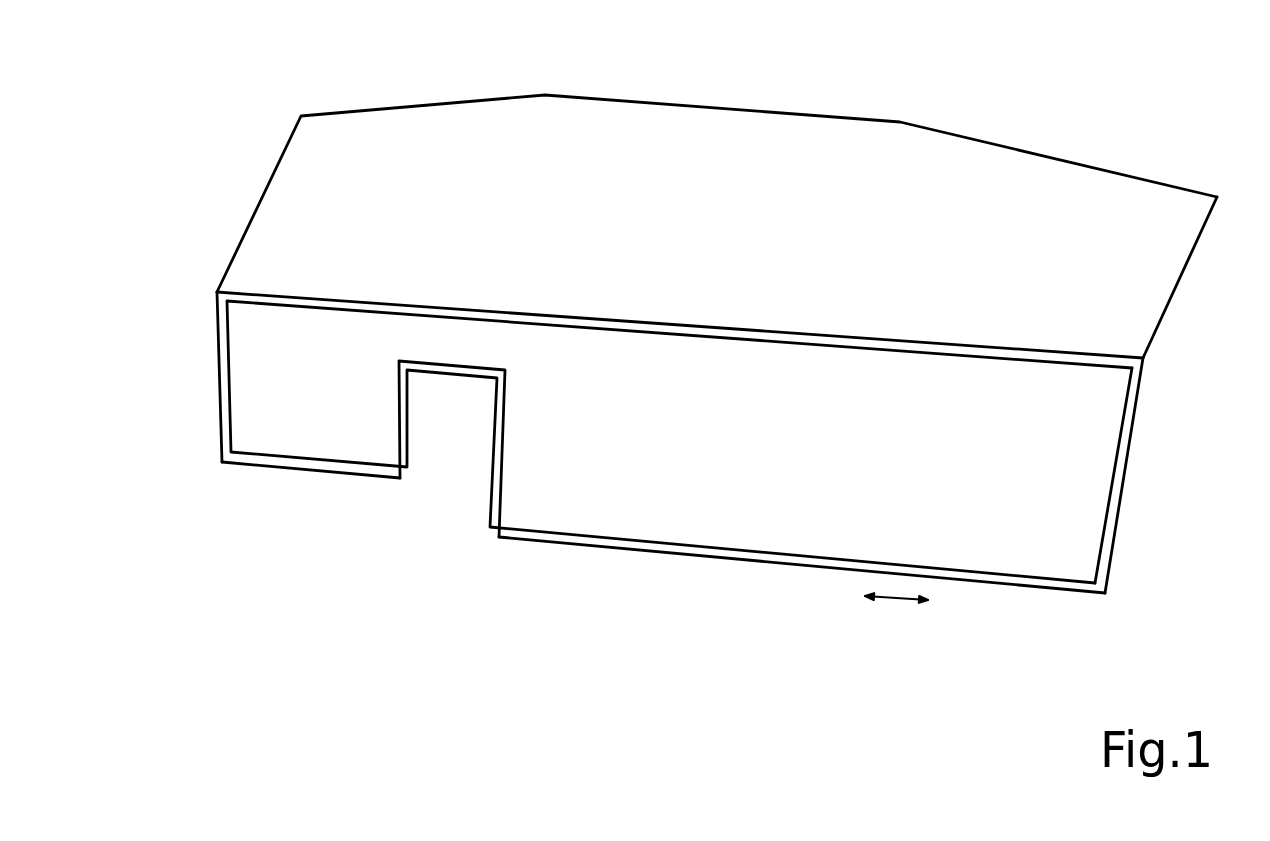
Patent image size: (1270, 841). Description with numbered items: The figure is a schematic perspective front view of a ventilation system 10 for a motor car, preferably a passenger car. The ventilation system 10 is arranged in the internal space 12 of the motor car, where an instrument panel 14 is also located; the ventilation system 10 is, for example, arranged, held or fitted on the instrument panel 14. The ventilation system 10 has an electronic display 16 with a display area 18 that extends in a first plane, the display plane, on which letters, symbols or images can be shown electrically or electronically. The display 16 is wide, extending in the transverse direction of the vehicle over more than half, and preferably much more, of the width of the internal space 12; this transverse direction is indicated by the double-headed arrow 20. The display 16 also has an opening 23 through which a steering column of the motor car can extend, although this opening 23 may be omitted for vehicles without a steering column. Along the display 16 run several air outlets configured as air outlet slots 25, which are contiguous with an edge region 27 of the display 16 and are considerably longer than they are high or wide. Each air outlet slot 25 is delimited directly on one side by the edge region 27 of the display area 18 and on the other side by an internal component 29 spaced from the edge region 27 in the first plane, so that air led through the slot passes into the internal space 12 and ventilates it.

The ventilation system 10 is at (727, 569).
The internal space 12 is at (1064, 128).
The instrument panel 14 is at (1132, 168).
The electronic display 16 is at (674, 524).
The display area 18 is at (1083, 457).
The double-headed arrow 20 is at (895, 598).
The opening 23 is at (448, 465).
The air outlet slot 25 is at (211, 392).
The edge region 27 is at (218, 370).
The internal component 29 is at (1117, 520).